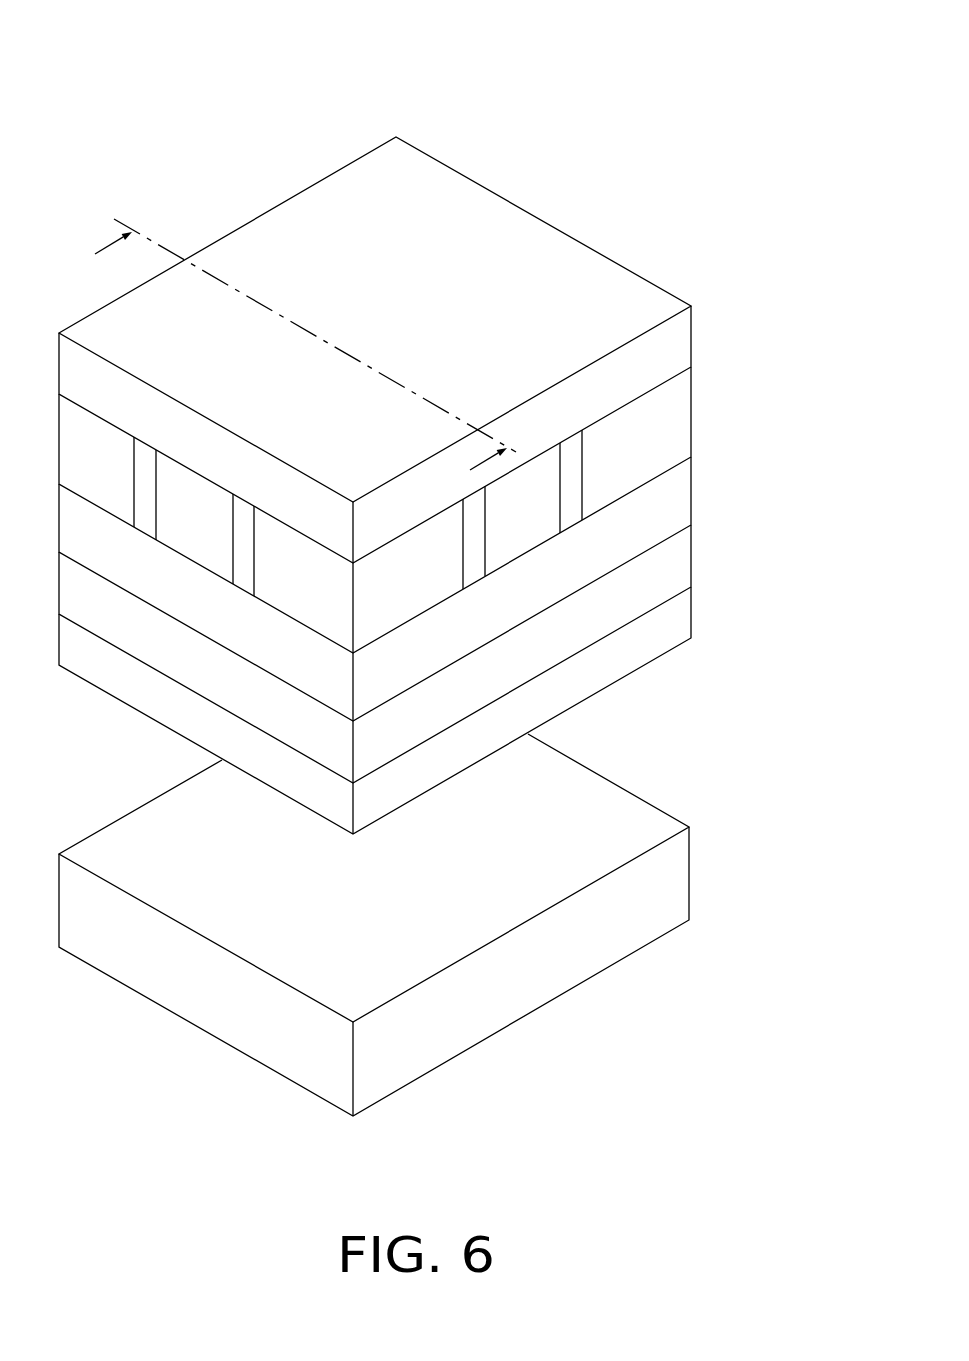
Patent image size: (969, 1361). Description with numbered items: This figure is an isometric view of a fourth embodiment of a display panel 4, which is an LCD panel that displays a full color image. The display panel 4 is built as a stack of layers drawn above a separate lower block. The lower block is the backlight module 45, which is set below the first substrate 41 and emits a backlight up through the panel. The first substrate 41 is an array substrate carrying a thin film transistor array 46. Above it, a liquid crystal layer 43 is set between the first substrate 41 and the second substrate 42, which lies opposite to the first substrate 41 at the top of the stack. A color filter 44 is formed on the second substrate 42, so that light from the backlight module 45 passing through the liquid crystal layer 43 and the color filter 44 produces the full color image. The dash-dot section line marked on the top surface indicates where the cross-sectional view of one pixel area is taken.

The display panel 4 is at (230, 50).
The first substrate 41 is at (673, 627).
The second substrate 42 is at (675, 343).
The liquid crystal layer 43 is at (670, 503).
The color filter 44 is at (673, 427).
The backlight module 45 is at (635, 817).
The thin film transistor (TFT) array 46 is at (676, 560).